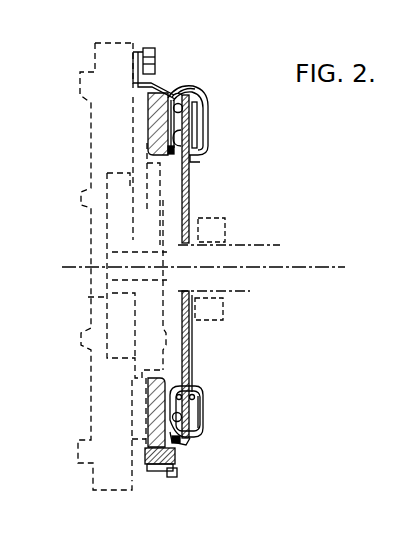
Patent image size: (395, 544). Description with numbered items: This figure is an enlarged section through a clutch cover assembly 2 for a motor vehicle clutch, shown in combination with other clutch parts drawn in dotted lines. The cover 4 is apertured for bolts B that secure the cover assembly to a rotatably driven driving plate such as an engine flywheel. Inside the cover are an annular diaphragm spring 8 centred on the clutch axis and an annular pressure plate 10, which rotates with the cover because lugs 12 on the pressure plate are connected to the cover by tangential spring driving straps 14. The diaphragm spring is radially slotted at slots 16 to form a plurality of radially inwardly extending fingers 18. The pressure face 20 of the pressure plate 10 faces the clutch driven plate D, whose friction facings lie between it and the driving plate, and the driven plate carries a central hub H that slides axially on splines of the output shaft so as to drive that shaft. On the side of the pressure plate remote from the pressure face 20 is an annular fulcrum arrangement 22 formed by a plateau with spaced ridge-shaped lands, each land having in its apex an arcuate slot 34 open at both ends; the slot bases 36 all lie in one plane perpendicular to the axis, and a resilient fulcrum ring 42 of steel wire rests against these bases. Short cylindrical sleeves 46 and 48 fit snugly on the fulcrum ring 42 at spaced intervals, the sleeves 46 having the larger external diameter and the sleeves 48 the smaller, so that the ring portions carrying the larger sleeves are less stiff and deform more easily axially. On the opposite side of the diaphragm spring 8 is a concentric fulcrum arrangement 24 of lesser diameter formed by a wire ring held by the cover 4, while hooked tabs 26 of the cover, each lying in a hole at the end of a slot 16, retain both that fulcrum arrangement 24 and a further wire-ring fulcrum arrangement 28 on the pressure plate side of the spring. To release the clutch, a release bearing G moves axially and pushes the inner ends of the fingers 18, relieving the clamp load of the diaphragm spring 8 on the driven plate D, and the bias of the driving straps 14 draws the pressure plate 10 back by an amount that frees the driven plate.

The clutch cover assembly 2 is at (232, 135).
The cover 4 is at (161, 82).
The annular diaphragm spring 8 is at (207, 120).
The annular pressure plate 10 is at (173, 93).
The lugs 12 is at (158, 472).
The spring driving straps 14 is at (170, 477).
The slots 16 is at (187, 338).
The fingers 18 is at (192, 208).
The pressure face 20 is at (147, 417).
The annular fulcrum arrangement 22 is at (192, 90).
The fulcrum arrangement 24 is at (197, 154).
The hooked tabs 26 is at (148, 147).
The annular fulcrum arrangement 28 is at (188, 173).
The arcuate slot 34 is at (190, 443).
The slot bases 36 is at (200, 403).
The resilient fulcrum ring 42 is at (207, 128).
The sleeves 46 is at (200, 95).
The sleeves 48 is at (203, 425).
The bolts B is at (152, 48).
The clutch release bearing G is at (213, 223).
The clutch driven plate D is at (133, 190).
The central hub H is at (120, 244).